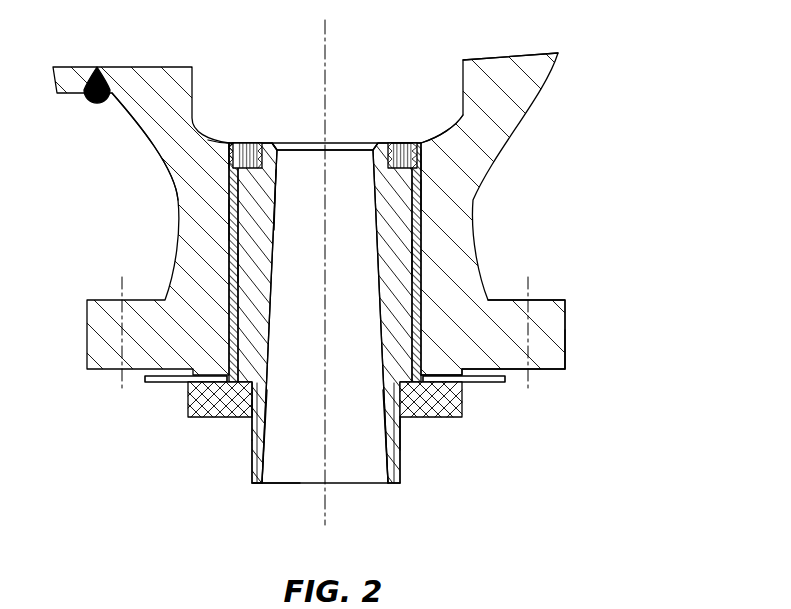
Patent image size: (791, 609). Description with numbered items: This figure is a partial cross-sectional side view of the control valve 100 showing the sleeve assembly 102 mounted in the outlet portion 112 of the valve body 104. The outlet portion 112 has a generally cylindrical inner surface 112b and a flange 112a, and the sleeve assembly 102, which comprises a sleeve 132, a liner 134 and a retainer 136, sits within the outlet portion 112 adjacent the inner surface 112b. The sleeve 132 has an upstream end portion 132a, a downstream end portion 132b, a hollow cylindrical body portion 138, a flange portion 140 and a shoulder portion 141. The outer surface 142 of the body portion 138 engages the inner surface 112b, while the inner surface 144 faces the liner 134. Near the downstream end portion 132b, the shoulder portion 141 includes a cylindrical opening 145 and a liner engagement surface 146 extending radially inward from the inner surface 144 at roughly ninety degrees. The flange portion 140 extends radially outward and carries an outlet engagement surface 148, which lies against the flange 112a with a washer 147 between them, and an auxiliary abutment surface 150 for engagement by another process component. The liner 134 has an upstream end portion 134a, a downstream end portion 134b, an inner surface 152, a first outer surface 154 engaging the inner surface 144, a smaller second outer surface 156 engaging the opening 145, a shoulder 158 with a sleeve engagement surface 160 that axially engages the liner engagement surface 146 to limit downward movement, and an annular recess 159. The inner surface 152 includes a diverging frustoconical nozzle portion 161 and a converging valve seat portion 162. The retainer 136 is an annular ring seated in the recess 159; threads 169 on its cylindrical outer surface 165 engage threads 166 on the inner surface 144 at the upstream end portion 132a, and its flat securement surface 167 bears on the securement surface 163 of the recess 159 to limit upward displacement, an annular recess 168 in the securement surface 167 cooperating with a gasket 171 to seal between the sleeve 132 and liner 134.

The control valve 100 is at (638, 131).
The sleeve assembly 102 is at (438, 432).
The valve body 104 is at (576, 62).
The outlet portion 112 is at (188, 236).
The flange 112a is at (557, 337).
The inner surface 112b is at (224, 176).
The sleeve 132 is at (245, 270).
The upstream end portion 132a is at (227, 141).
The downstream end portion 132b is at (190, 394).
The liner 134 is at (216, 317).
The upstream end portion 134a is at (365, 185).
The downstream end portion 134b is at (388, 440).
The retainer 136 is at (408, 132).
The body portion 138 is at (190, 380).
The flange portion 140 is at (228, 405).
The shoulder portion 141 is at (224, 398).
The outer surface 142 is at (428, 203).
The inner surface 144 is at (426, 258).
The opening 145 is at (390, 418).
The liner engagement surface 146 is at (268, 392).
The washer 147 is at (470, 380).
The outlet engagement surface 148 is at (442, 373).
The auxiliary abutment surface 150 is at (415, 420).
The inner surface 152 is at (366, 322).
The first outer surface 154 is at (227, 223).
The second outer surface 156 is at (246, 467).
The shoulder 158 is at (465, 343).
The annular recess 159 is at (242, 158).
The sleeve engagement surface 160 is at (443, 417).
The nozzle portion 161 is at (268, 320).
The valve seat portion 162 is at (302, 145).
The securement surface 163 is at (227, 151).
The outer surface 165 is at (226, 143).
The threads 166 is at (426, 191).
The securement surface 167 is at (262, 180).
The annular recess 168 is at (272, 203).
The threads 169 is at (428, 145).
The gasket 171 is at (426, 152).